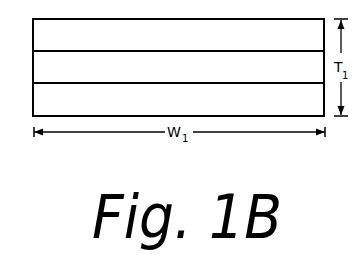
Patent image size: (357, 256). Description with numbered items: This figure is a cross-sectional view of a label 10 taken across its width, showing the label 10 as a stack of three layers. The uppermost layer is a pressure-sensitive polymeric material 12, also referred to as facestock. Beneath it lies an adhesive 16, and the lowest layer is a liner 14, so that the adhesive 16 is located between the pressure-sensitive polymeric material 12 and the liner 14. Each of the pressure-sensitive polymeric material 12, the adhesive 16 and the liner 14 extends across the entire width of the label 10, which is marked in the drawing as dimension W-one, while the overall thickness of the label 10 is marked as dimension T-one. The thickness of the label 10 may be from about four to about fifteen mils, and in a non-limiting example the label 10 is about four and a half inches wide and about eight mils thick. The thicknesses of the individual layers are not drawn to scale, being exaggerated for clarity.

The label 10 is at (55, 162).
The pressure-sensitive polymeric material 12 is at (188, 44).
The adhesive 16 is at (188, 76).
The liner 14 is at (188, 108).